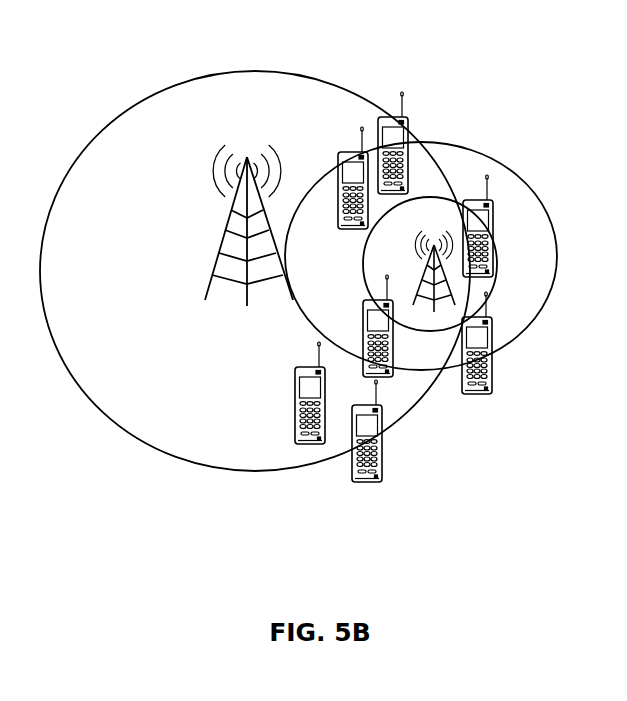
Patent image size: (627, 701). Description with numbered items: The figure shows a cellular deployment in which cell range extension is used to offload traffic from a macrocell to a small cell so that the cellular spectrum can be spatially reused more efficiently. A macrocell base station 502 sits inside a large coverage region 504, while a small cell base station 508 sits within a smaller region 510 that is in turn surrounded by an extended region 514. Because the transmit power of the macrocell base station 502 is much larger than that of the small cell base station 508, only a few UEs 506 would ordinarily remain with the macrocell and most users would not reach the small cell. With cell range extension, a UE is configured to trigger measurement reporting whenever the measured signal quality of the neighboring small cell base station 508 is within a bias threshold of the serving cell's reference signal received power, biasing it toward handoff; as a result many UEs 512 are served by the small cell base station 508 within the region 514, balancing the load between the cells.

The macrocell base station 502 is at (205, 278).
The first coverage area 504 is at (117, 427).
The UEs connected to macrocell base station 506 is at (317, 443).
The small cell base station 508 is at (420, 292).
The inner coverage area 510 is at (495, 245).
The UEs connected to small cell base station 512 is at (397, 117).
The second coverage area 514 is at (460, 163).